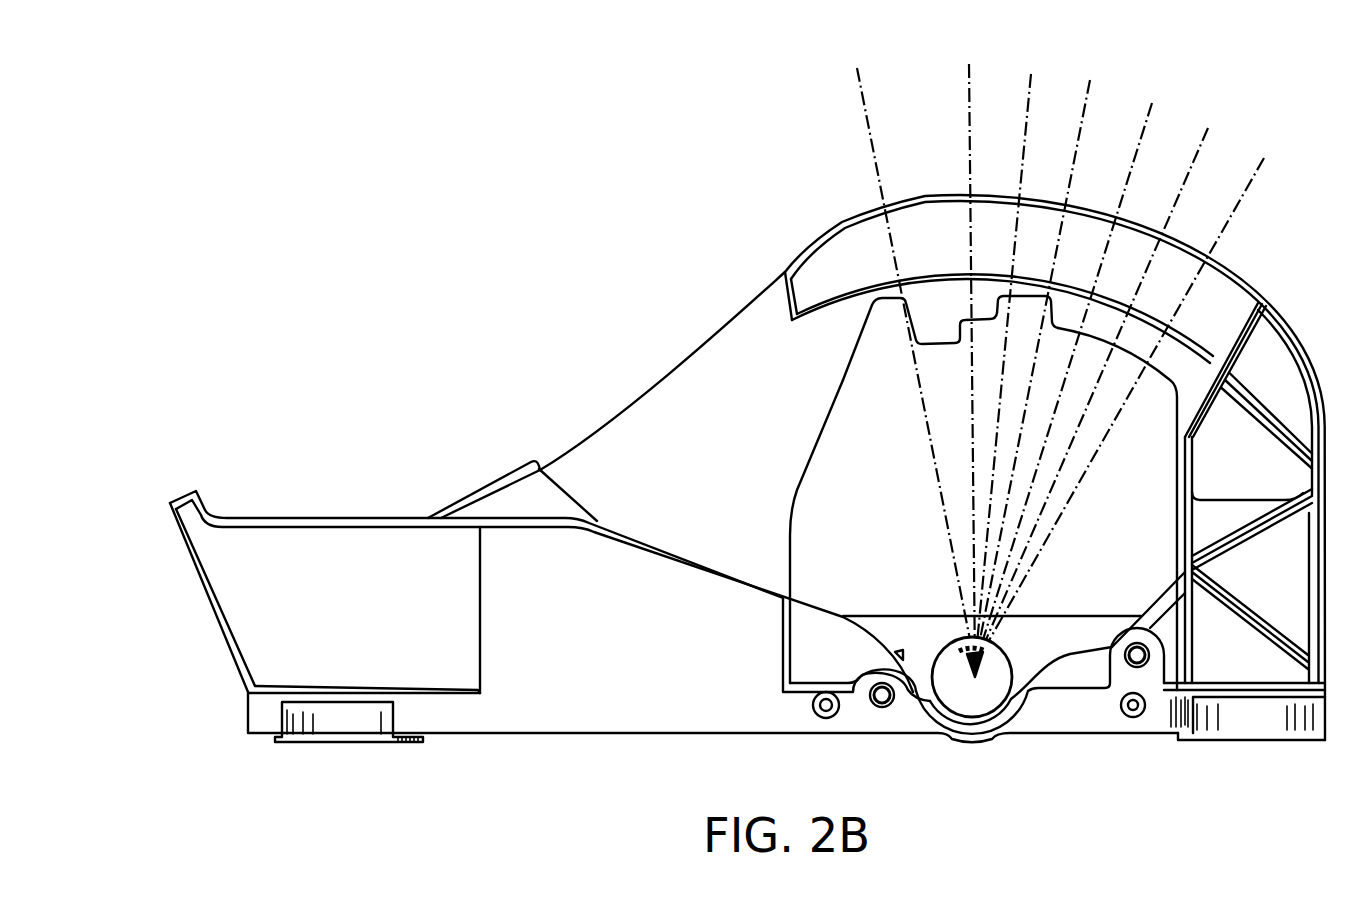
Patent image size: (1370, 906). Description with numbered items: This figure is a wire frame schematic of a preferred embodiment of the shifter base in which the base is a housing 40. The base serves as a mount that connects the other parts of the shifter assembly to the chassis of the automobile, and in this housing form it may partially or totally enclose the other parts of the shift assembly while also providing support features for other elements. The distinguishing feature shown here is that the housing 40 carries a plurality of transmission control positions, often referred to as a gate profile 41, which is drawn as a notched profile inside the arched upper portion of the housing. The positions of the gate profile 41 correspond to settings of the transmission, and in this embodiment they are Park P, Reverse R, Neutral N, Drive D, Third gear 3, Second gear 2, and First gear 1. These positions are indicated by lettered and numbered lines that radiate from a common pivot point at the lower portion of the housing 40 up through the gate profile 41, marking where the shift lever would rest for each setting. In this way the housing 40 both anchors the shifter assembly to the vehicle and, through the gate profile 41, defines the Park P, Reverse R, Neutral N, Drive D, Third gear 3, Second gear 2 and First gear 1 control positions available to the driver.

The housing 40 is at (541, 383).
The gate profile 41 is at (926, 329).
The Park P is at (903, 335).
The Reverse R is at (968, 333).
The Neutral N is at (1011, 338).
The Drive D is at (1040, 343).
The Third gear 3 is at (1073, 353).
The Second gear 2 is at (1104, 366).
The First gear 1 is at (1134, 381).